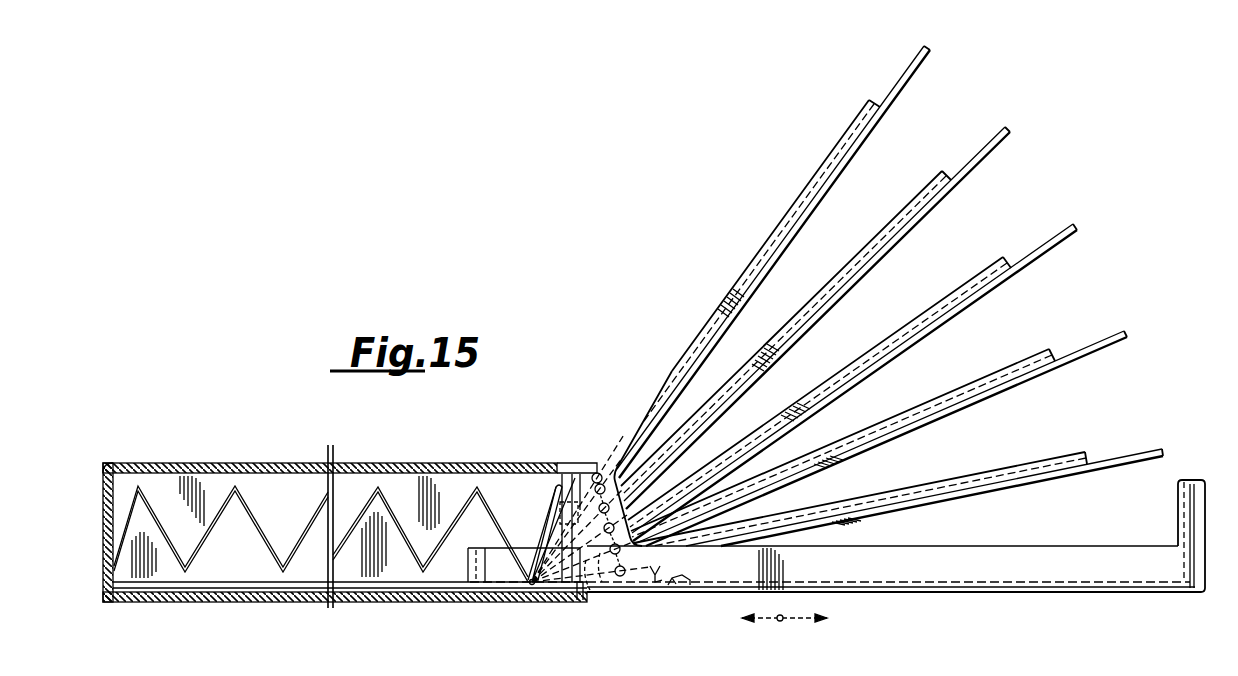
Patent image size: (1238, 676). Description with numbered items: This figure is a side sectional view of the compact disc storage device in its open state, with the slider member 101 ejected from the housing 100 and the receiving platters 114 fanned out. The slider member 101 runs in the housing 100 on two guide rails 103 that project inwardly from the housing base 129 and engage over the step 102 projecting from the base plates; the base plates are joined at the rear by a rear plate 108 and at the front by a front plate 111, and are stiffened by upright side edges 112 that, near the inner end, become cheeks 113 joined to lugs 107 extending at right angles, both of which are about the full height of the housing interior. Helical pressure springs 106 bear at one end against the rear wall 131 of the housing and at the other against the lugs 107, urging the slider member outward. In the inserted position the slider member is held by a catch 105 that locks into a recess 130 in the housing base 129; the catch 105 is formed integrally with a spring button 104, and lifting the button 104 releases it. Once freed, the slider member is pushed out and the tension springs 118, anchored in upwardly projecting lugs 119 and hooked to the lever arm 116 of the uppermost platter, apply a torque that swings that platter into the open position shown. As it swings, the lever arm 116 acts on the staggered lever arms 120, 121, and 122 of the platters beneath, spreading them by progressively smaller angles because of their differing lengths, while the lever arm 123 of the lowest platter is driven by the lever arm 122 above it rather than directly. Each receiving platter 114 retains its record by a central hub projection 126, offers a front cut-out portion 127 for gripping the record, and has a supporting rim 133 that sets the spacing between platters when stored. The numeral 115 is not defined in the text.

The housing 100 is at (228, 463).
The slider member 101 is at (923, 592).
The step 102 is at (1018, 590).
The guide rails 103 is at (243, 596).
The spring button 104 is at (1203, 548).
The catch 105 is at (1135, 596).
The helical pressure springs 106 is at (253, 490).
The lugs 107 is at (553, 485).
The rear plate 108 is at (466, 560).
The front plate 111 is at (1188, 480).
The upright side edges 112 is at (952, 556).
The cheeks 113 is at (575, 478).
The receiving platters 114 is at (907, 205).
The ball chain 115 is at (599, 474).
The lever arm of uppermost receiving platter 116 is at (583, 507).
The tension springs 118 is at (656, 584).
The lugs 119 is at (690, 586).
The lever arm 120 is at (562, 521).
The lever arm 121 is at (600, 584).
The lever arm 122 is at (580, 595).
The lever arm of lowest receiving platter 123 is at (590, 592).
The central hub projections 126 is at (790, 318).
The front cut-out portions 127 is at (893, 104).
The housing base 129 is at (345, 600).
The recess 130 is at (530, 592).
The rear wall 131 is at (108, 463).
The supporting rim 133 is at (826, 158).